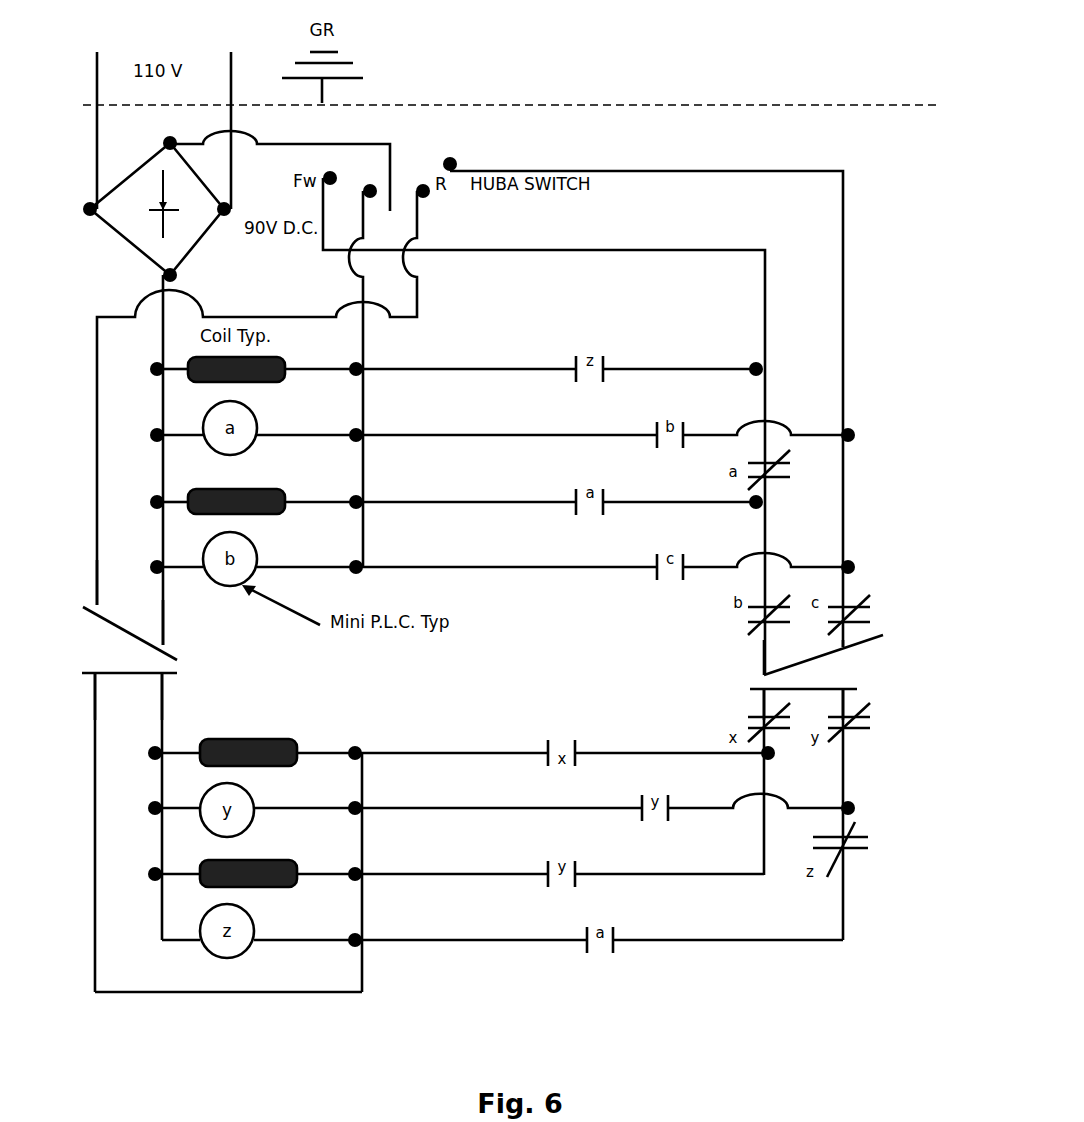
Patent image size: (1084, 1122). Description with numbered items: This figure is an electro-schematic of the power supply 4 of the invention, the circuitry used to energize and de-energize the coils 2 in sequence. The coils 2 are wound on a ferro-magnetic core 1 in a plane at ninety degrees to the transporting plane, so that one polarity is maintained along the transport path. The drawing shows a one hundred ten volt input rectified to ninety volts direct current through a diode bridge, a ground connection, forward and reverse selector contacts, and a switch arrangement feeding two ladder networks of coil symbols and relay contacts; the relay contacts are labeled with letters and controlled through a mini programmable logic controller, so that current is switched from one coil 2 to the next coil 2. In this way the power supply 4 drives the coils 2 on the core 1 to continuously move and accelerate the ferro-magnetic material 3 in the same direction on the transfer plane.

The ferro-magnetic core 1 is at (155, 660).
The coil 2 is at (87, 640).
The ferro-magnetic material 3 is at (748, 680).
The power supply 4 is at (852, 680).